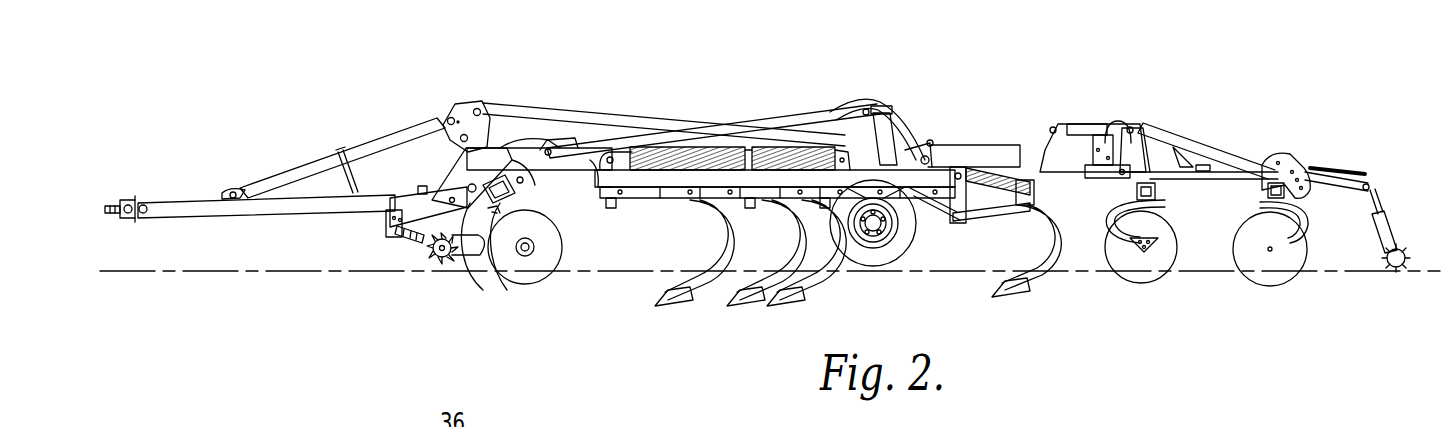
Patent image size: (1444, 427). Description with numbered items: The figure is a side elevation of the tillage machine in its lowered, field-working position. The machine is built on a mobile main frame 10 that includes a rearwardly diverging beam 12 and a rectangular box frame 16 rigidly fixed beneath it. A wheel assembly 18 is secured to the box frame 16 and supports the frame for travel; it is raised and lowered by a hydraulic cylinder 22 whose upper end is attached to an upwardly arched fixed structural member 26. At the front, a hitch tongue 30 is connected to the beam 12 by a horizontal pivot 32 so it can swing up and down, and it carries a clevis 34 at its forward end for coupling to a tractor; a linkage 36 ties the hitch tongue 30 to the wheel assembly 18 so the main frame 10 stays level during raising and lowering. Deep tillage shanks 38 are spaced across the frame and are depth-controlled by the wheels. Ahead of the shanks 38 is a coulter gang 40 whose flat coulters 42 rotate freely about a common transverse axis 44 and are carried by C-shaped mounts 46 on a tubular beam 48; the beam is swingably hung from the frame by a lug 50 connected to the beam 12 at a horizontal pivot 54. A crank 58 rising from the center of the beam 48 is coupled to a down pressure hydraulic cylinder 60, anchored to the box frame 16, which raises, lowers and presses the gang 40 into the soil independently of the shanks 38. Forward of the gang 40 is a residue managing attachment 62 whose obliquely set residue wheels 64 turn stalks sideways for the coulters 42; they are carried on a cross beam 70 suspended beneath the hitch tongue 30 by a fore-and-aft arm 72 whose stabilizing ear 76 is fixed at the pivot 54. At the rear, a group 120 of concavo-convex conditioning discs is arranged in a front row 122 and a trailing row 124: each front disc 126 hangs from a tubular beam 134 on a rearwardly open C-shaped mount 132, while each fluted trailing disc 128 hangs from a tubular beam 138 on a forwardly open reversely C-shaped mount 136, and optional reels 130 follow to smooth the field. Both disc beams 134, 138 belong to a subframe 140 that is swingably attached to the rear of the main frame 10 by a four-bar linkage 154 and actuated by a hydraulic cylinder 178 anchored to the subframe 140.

The main frame 10 is at (990, 138).
The beam 12 is at (548, 160).
The box frame 16 is at (645, 178).
The wheel assembly 18 is at (893, 258).
The hydraulic cylinder 22 is at (890, 135).
The fixed structural member 26 is at (828, 115).
The hitch tongue 30 is at (228, 205).
The horizontal pivot 32 is at (450, 195).
The clevis 34 is at (113, 213).
The linkage 36 is at (505, 112).
The deep tillage shank 38 is at (1055, 200).
The coulter gang 40 is at (545, 290).
The coulter 42 is at (560, 250).
The transverse axis 44 is at (535, 252).
The C-shaped mount 46 is at (489, 292).
The tubular beam 48 is at (505, 215).
The lug 50 is at (470, 262).
The horizontal pivot 54 is at (472, 178).
The crank 58 is at (523, 182).
The down pressure hydraulic cylinder 60 is at (545, 140).
The residue managing attachment 62 is at (408, 238).
The residue wheel 64 is at (432, 262).
The cross beam 70 is at (385, 235).
The fore-and-aft arm 72 is at (410, 197).
The stabilizing ear 76 is at (458, 187).
The group of conditioning discs 120 is at (1208, 295).
The front row 122 is at (1117, 285).
The trailing row 124 is at (1270, 290).
The front disc 126 is at (1165, 252).
The trailing disc 128 is at (1283, 278).
The reel 130 is at (1405, 260).
The C-shaped mount 132 is at (1108, 215).
The tubular beam 134 is at (1150, 193).
The reversely C-shaped mount 136 is at (1305, 222).
The tubular beam 138 is at (1272, 185).
The subframe 140 is at (1232, 185).
The four-bar linkage 154 is at (1082, 122).
The hydraulic cylinder 178 is at (1155, 145).